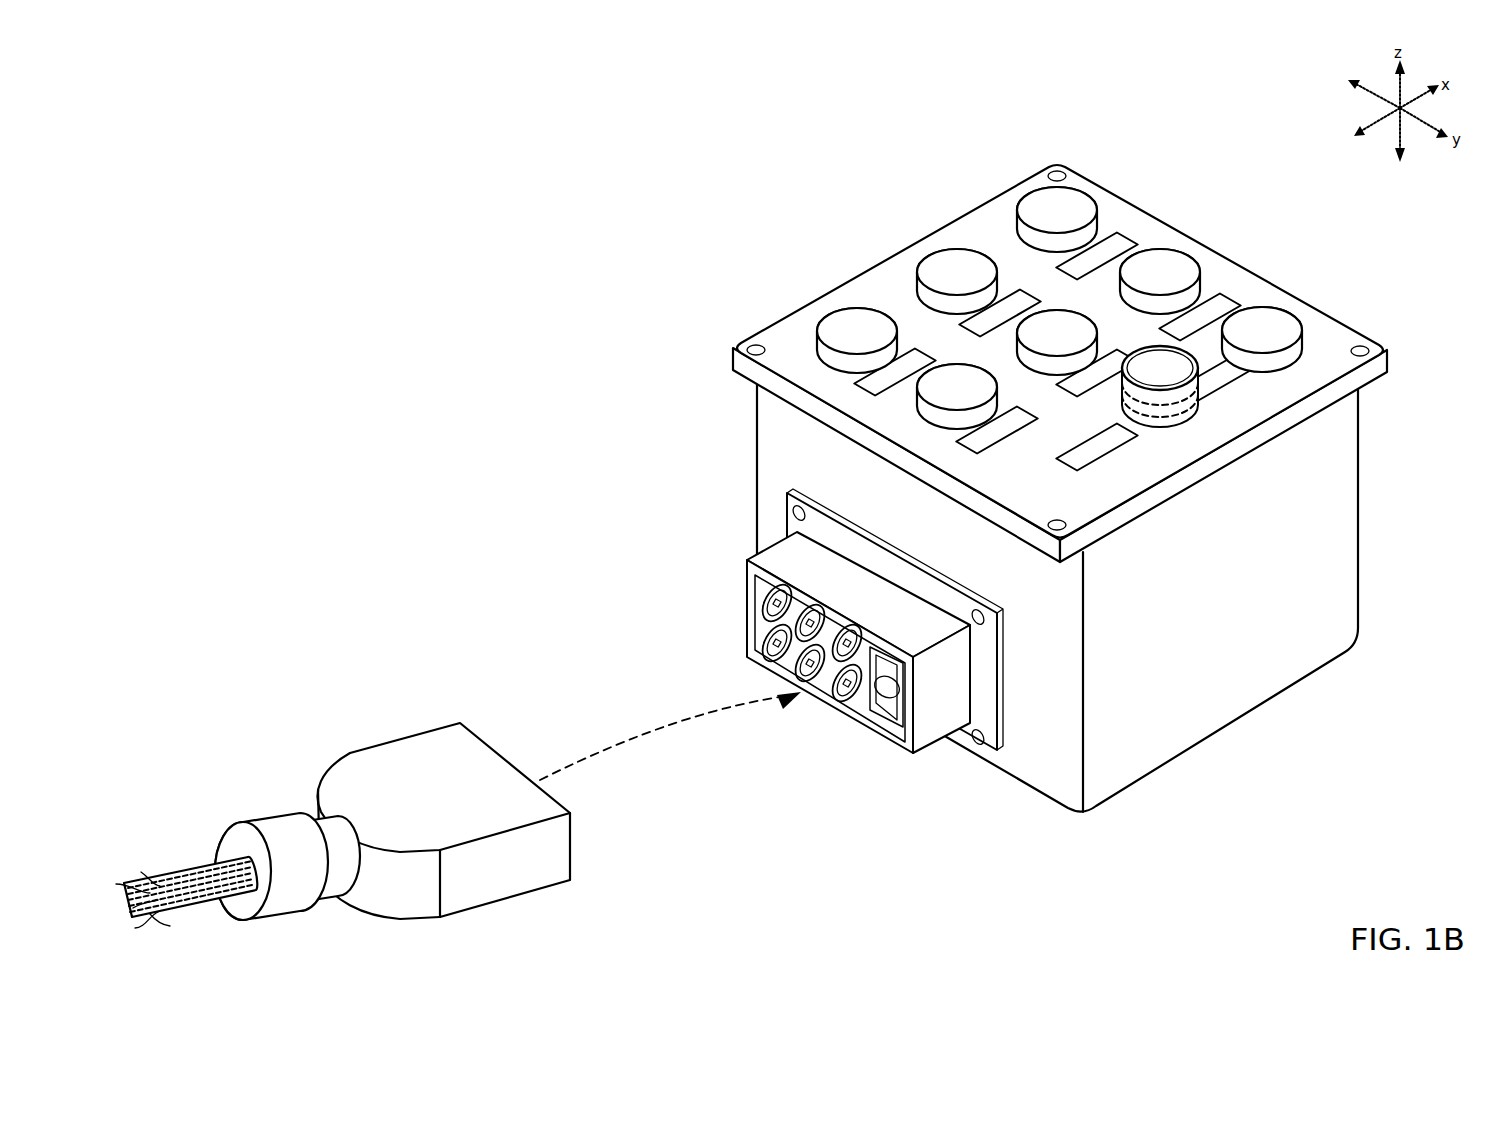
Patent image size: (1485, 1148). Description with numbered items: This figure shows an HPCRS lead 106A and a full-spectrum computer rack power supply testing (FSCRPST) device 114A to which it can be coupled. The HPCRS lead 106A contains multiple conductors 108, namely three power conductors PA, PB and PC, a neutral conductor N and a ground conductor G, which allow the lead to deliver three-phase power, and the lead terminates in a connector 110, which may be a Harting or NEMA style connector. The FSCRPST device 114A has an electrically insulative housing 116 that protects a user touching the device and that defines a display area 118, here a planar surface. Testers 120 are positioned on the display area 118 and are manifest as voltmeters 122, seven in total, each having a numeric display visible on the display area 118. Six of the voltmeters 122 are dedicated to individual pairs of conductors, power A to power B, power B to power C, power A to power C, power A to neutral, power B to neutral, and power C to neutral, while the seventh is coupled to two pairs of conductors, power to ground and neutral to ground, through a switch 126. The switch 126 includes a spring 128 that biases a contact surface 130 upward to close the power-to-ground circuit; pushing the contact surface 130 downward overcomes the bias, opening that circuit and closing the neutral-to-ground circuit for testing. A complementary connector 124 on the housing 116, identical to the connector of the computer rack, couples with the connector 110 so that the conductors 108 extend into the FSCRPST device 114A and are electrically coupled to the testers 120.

The HPCRS lead 106A is at (397, 843).
The conductors 108 is at (198, 910).
The connector 110 is at (503, 900).
The FSCRPST device 114A is at (908, 498).
The housing 116 is at (757, 437).
The display area 118 is at (800, 315).
The testers 120 is at (1059, 295).
The voltmeters 122 is at (1059, 296).
The complementary connector 124 is at (872, 733).
The switch 126 is at (1176, 396).
The spring 128 is at (1196, 414).
The contact surface 130 is at (1143, 357).